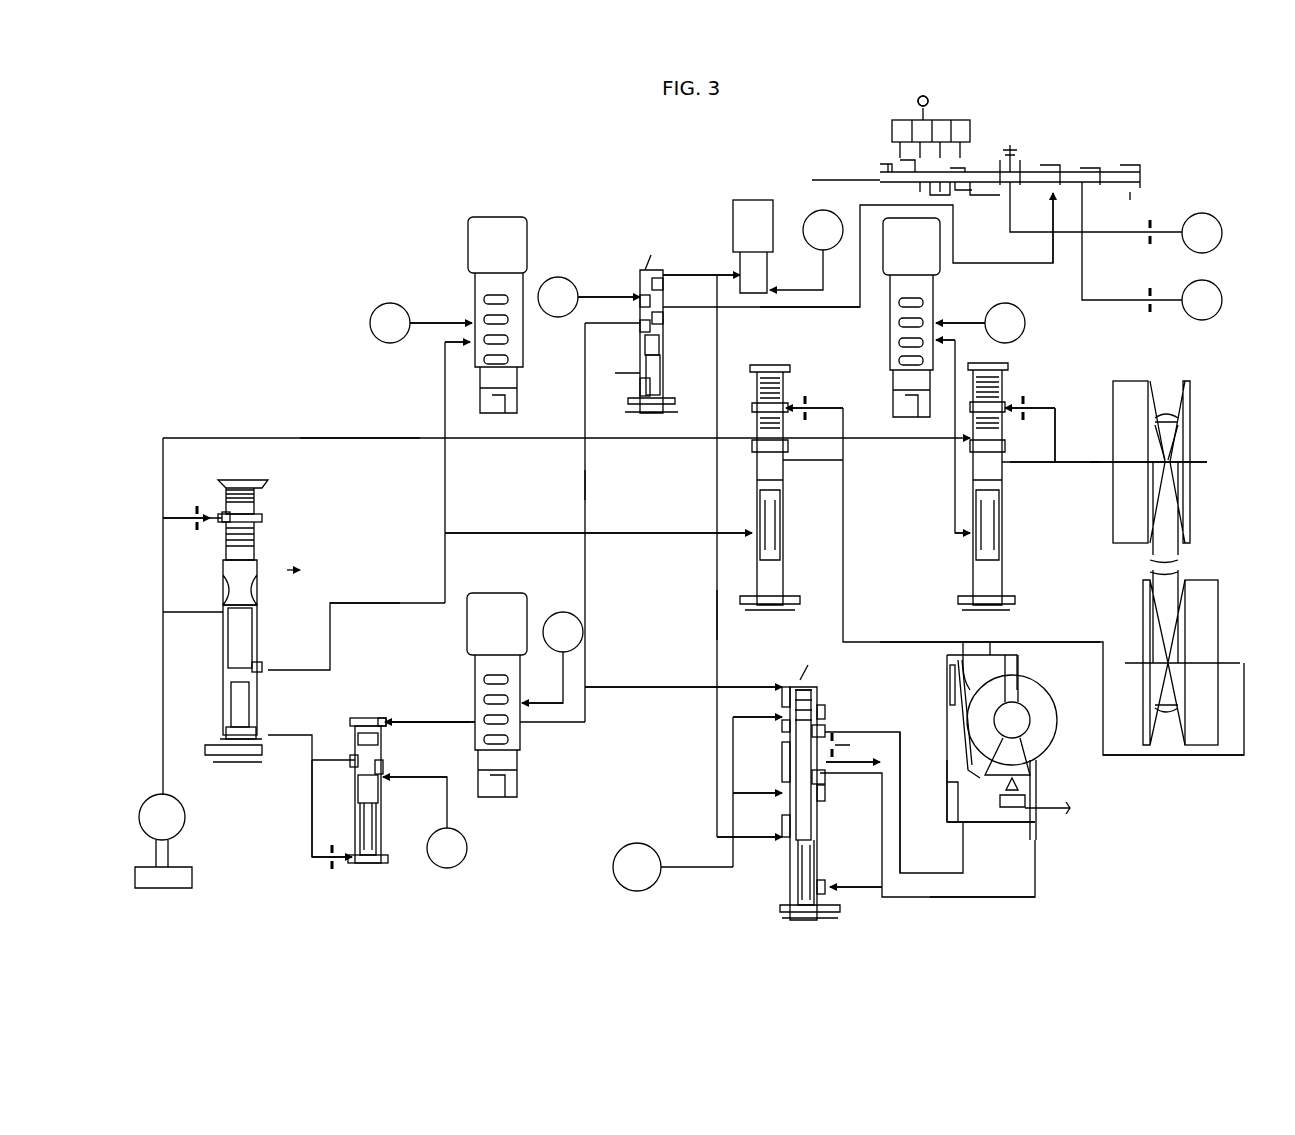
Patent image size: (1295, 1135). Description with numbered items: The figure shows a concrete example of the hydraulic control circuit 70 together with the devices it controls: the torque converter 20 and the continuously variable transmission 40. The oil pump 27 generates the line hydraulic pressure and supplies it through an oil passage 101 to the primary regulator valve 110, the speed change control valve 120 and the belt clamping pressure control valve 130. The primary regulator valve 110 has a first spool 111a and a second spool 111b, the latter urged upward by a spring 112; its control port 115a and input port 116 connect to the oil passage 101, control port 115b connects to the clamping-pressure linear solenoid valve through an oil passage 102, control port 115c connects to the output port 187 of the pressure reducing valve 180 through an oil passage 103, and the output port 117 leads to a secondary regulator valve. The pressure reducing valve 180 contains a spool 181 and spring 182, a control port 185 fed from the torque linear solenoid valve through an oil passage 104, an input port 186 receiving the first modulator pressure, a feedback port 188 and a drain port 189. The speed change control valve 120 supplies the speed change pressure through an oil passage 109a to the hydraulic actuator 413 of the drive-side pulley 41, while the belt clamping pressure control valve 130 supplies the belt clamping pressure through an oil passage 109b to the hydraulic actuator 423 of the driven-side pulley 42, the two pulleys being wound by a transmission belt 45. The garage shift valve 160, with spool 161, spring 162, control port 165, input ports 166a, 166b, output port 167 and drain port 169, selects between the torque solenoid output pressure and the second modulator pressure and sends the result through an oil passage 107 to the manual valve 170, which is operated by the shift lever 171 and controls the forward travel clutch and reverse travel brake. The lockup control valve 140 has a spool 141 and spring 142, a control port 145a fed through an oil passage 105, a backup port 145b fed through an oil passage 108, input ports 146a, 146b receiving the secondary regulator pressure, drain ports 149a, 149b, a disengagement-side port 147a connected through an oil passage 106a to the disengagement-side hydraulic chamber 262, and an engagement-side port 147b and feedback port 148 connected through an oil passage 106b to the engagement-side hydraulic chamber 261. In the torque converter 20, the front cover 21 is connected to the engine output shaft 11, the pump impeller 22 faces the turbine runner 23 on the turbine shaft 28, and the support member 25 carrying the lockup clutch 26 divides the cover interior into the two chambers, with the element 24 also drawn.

The hydraulic control circuit 70 is at (703, 497).
The shift lever 171 is at (918, 102).
The manual valve 170 is at (1138, 180).
The garage shift valve 160 is at (648, 268).
The oil passage 107 is at (818, 307).
The input port 166a is at (636, 303).
The control port 165 is at (663, 283).
The input port 166b is at (640, 330).
The output port 167 is at (663, 318).
The spool 161 is at (645, 350).
The spring 162 is at (663, 350).
The drain port 169 is at (636, 382).
The belt clamping pressure control valve 130 is at (785, 365).
The speed change control valve 120 is at (1005, 382).
The drive-side pulley 41 is at (1110, 368).
The transmission belt 45 is at (1165, 410).
The hydraulic actuator 413 is at (1113, 395).
The oil passage 101 is at (355, 438).
The primary regulator valve 110 is at (222, 480).
The control port 115a is at (222, 512).
The output port 117 is at (262, 560).
The oil passage 102 is at (360, 603).
The input port 116 is at (218, 612).
The first spool 111a is at (253, 645).
The control port 115b is at (262, 668).
The second spool 111b is at (228, 695).
The spring 112 is at (226, 733).
The control port 115c is at (262, 745).
The oil pump 27 is at (186, 815).
The oil passage 103 is at (312, 805).
The pressure reducing valve 180 is at (352, 716).
The control port 185 is at (378, 716).
The drain port 189 is at (382, 738).
The oil passage 104 is at (470, 745).
The input port 186 is at (383, 768).
The output port 187 is at (352, 762).
The spool 181 is at (380, 790).
The spring 182 is at (380, 812).
The feedback port 188 is at (352, 865).
The oil passage 105 is at (585, 485).
The oil passage 108 is at (715, 615).
The oil passage 109a is at (1050, 470).
The hydraulic actuator 423 is at (1215, 595).
The driven-side pulley 42 is at (1125, 588).
The continuously variable transmission 40 is at (1191, 765).
The torque converter 20 is at (1082, 765).
The turbine shaft 28 is at (1040, 850).
The oil passage 109b is at (925, 635).
The support member 25 is at (957, 651).
The engagement-side hydraulic chamber 261 is at (994, 634).
The turbine runner 23 is at (1020, 665).
The lockup clutch 26 is at (950, 684).
The pump impeller 22 is at (1055, 690).
The return spring 24 is at (1035, 745).
The oil passage 106a is at (913, 726).
The front cover 21 is at (947, 760).
The disengagement-side hydraulic chamber 262 is at (960, 788).
The output shaft 11 is at (945, 822).
The oil passage 106b is at (970, 897).
The lockup control valve 140 is at (796, 680).
The control port 145a is at (786, 697).
The disengagement-side port 147a is at (820, 712).
The drain port 149a is at (822, 730).
The input port 146a is at (788, 726).
The input port 146b is at (788, 782).
The drain port 149b is at (822, 778).
The engagement-side port 147b is at (820, 795).
The backup port 145b is at (788, 826).
The spool 141 is at (817, 820).
The spring 142 is at (816, 845).
The feedback port 148 is at (822, 882).